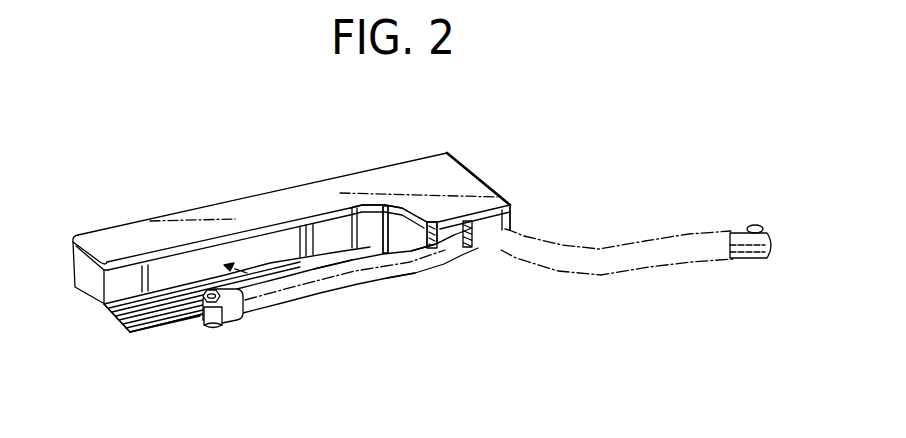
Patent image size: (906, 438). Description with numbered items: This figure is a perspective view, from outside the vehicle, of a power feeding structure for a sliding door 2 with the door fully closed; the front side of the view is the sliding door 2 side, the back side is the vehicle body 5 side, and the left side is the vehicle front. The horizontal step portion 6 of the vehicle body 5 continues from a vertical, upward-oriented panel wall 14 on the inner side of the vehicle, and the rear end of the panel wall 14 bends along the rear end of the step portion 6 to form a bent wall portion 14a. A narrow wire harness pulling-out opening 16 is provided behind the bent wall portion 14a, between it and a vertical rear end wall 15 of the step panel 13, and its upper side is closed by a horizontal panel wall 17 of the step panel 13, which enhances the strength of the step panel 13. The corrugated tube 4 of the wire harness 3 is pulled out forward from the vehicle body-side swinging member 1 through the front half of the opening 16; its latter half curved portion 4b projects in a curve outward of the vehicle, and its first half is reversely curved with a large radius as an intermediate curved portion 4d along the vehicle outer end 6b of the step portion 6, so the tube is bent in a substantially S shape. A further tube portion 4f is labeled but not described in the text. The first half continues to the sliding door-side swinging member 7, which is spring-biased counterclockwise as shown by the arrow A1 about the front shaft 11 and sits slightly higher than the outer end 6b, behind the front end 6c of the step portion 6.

The vehicle body-side swinging member 1 is at (467, 262).
The sliding door 2 is at (295, 316).
The wire harness 3 is at (387, 291).
The corrugated tube 4 is at (643, 243).
The latter half curved portion 4b is at (436, 265).
The intermediate curved portion 4d is at (333, 294).
The handle grip portion 4f is at (590, 276).
The vehicle body 5 is at (325, 162).
The step portion 6 is at (187, 303).
The vehicle outer end of the step portion 6b is at (197, 320).
The front end of the step portion 6c is at (117, 325).
The sliding door-side swinging member 7 is at (233, 324).
The front shaft 11 is at (209, 291).
The step panel 13 is at (477, 170).
The vertical panel wall 14 is at (278, 243).
The bent wall portion 14a is at (398, 200).
The vertical rear end wall 15 is at (513, 219).
The wire harness pulling-out opening 16 is at (511, 207).
The horizontal panel wall 17 is at (440, 185).
The arrow A1 is at (256, 304).